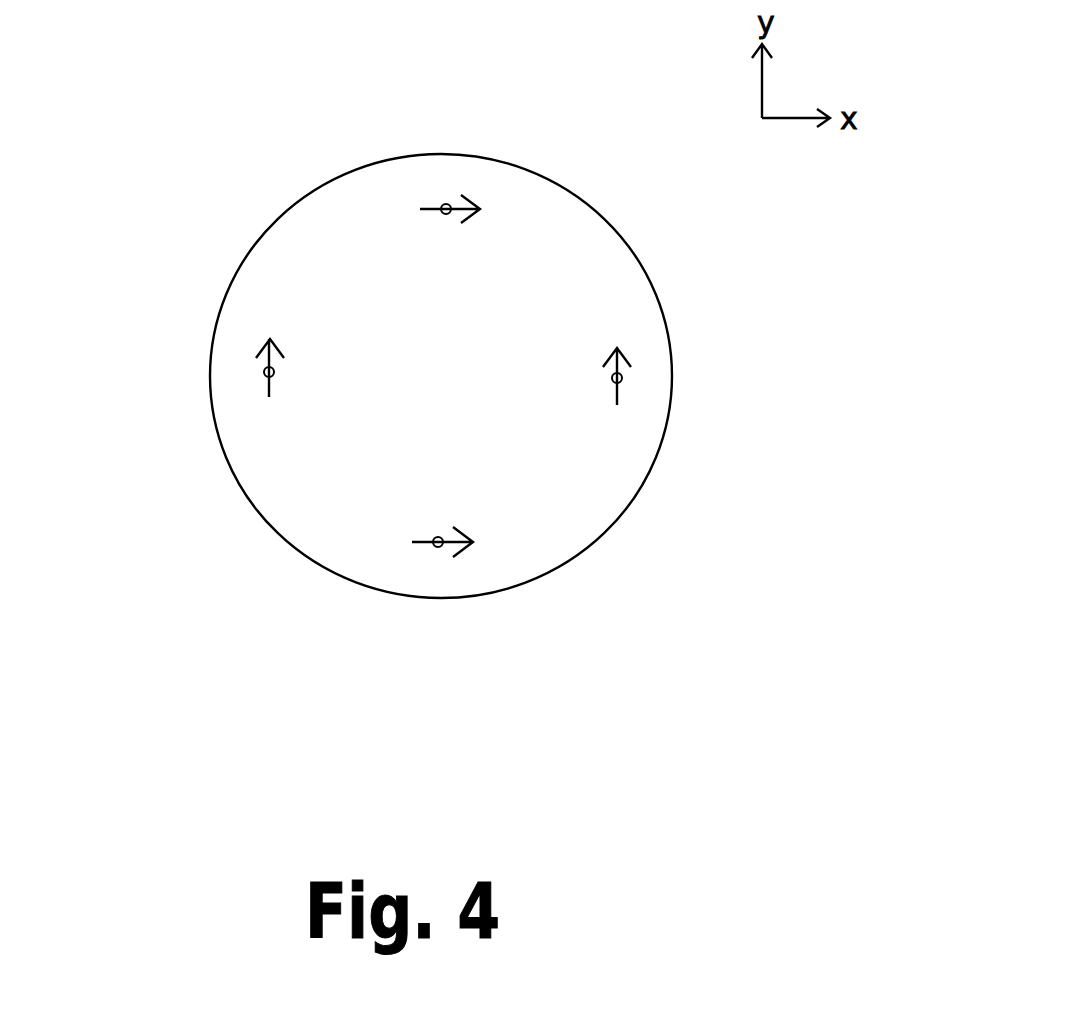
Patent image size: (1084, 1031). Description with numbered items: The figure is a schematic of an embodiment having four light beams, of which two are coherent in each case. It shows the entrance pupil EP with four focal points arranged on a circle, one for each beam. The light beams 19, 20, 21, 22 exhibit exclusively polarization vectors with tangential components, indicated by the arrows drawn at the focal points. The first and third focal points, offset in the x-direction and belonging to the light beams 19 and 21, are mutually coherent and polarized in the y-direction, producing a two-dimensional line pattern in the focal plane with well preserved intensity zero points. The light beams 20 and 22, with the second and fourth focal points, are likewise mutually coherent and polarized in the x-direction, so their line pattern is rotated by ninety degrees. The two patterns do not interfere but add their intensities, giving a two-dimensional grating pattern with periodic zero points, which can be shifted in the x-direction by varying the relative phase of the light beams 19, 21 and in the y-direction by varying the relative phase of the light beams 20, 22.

The light beam 19 is at (268, 378).
The light beam 20 is at (446, 204).
The light beam 21 is at (623, 378).
The light beam 22 is at (436, 548).
The entrance pupil EP is at (605, 513).